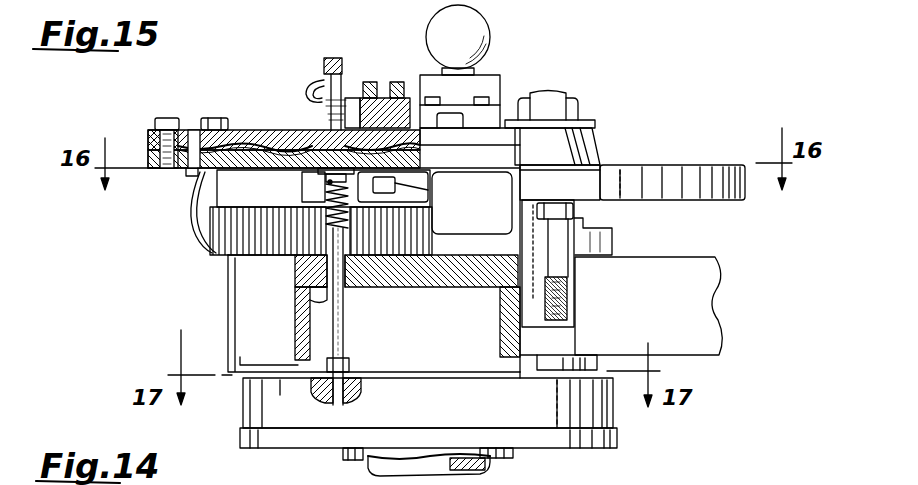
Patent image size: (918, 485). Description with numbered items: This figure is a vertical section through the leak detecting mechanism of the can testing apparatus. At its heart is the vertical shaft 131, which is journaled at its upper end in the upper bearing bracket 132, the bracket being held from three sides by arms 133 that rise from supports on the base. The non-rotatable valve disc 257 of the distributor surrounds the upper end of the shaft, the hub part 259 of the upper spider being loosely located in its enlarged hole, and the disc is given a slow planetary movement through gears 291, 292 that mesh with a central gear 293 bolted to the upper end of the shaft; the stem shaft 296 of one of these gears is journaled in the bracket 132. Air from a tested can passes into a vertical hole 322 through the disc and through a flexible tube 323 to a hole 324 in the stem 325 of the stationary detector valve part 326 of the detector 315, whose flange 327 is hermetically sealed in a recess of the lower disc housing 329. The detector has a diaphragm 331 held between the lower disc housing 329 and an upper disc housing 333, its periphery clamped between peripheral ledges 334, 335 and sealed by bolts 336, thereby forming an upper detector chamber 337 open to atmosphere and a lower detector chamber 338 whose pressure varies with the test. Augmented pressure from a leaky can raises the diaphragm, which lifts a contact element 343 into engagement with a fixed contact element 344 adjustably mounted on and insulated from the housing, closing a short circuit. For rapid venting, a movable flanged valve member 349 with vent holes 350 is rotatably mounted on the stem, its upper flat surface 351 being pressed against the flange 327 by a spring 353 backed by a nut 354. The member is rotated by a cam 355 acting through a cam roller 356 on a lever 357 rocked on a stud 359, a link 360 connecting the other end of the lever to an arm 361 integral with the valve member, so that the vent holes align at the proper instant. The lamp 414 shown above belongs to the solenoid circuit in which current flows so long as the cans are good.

The vertical shaft 131 is at (427, 462).
The upper bearing bracket 132 is at (527, 360).
The arms 133 is at (712, 309).
The valve disc 257 is at (602, 421).
The hub part 259 is at (514, 455).
The gear 291 is at (212, 249).
The gear 292 is at (612, 243).
The central gear 293 is at (437, 216).
The stem shaft 296 is at (550, 95).
The detector 315 is at (295, 130).
The vertical hole 322 is at (361, 395).
The flexible tube 323 is at (344, 341).
The hole 324 is at (342, 192).
The stem 325 is at (326, 182).
The stationary detector valve part 326 is at (334, 128).
The flange 327 is at (412, 128).
The lower disc housing 329 is at (193, 177).
The diaphragm 331 is at (275, 130).
The upper disc housing 333 is at (236, 130).
The peripheral ledge 334 is at (192, 130).
The peripheral ledge 335 is at (182, 170).
The bolts 336 is at (163, 118).
The upper detector chamber 337 is at (255, 142).
The lower detector chamber 338 is at (198, 187).
The contact element 343 is at (368, 90).
The fixed contact element 344 is at (340, 96).
The movable flanged valve member 349 is at (334, 228).
The vent holes 350 is at (330, 171).
The upper flat surface 351 is at (378, 262).
The spring 353 is at (329, 192).
The nut 354 is at (327, 300).
The cam 355 is at (713, 190).
The cam roller 356 is at (622, 204).
The lever 357 is at (560, 262).
The stud 359 is at (556, 203).
The link 360 is at (378, 200).
The arm 361 is at (330, 184).
The lamp 414 is at (480, 42).